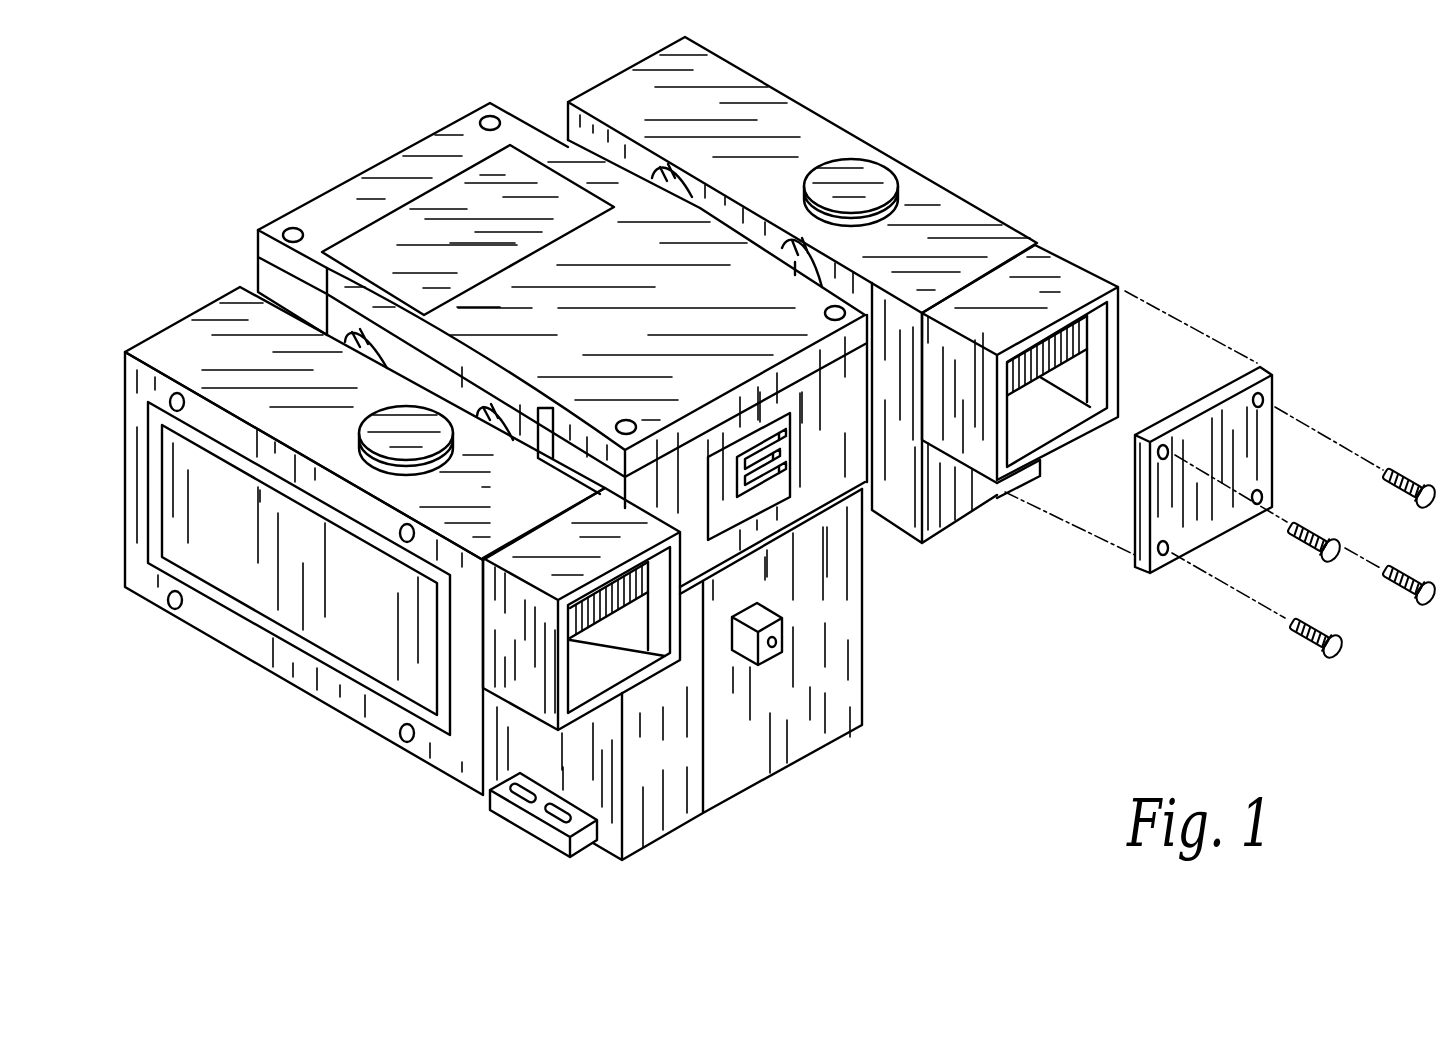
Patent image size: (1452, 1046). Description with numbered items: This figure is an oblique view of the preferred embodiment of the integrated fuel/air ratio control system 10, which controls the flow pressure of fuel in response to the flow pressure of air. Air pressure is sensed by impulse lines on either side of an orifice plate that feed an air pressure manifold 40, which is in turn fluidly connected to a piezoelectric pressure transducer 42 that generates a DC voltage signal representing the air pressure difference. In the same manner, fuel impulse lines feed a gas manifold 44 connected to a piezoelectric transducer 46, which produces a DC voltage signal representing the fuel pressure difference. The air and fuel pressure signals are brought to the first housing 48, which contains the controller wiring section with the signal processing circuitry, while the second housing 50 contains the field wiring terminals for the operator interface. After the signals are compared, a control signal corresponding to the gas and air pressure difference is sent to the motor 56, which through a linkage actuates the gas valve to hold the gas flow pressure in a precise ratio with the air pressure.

The integrated fuel/air ratio control system 10 is at (782, 468).
The air pressure manifold 40 is at (1180, 442).
The piezoelectric pressure transducer 42 is at (1062, 340).
The gas manifold 44 is at (664, 694).
The piezoelectric transducer 46 is at (630, 603).
The first housing 48 is at (200, 620).
The second housing 50 is at (955, 210).
The motor 56 is at (812, 686).